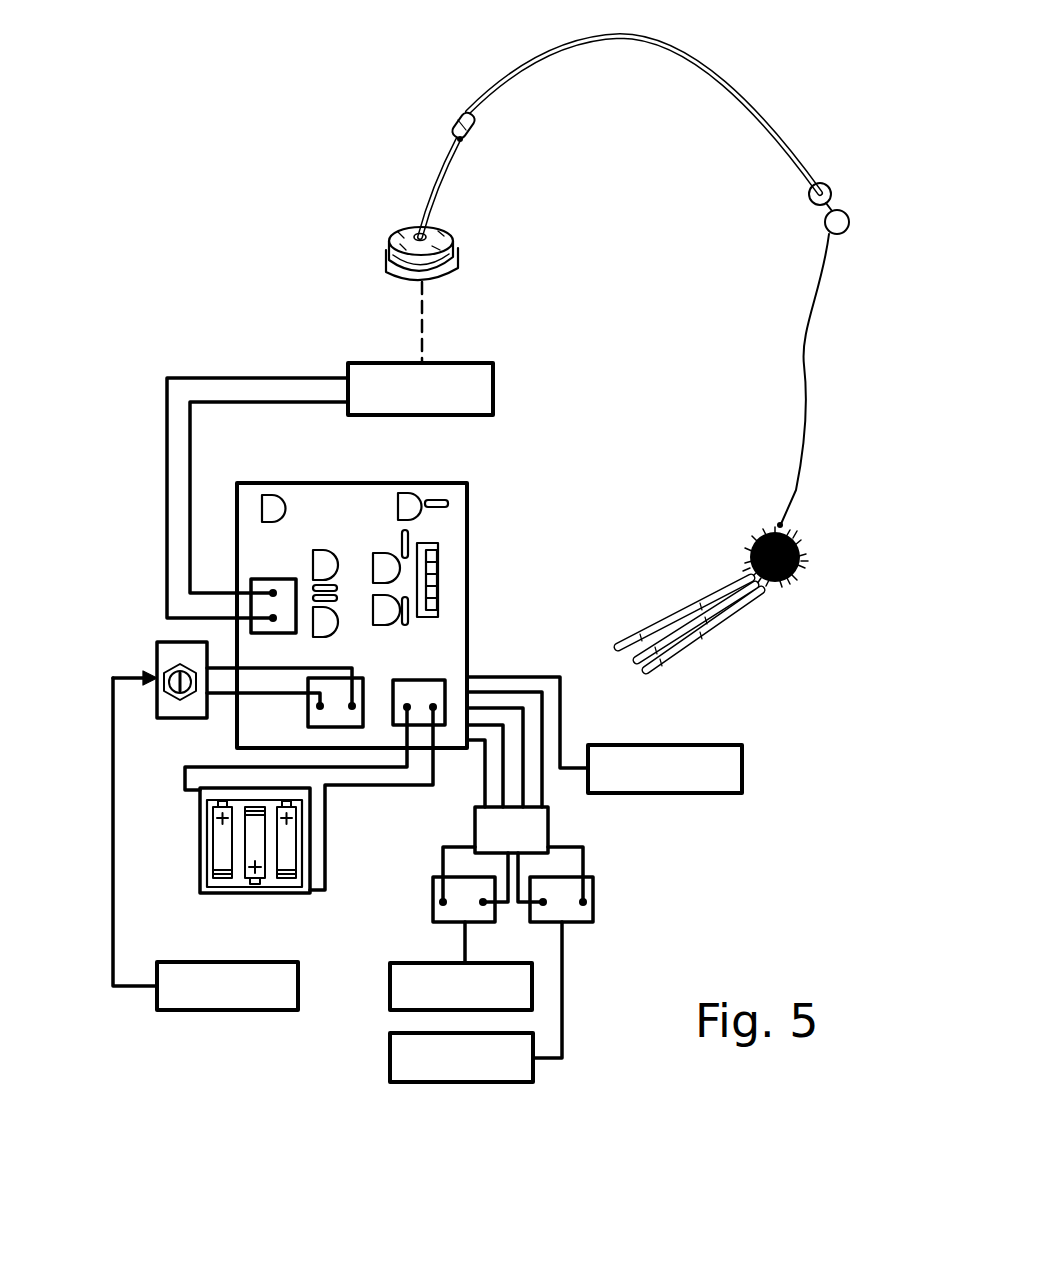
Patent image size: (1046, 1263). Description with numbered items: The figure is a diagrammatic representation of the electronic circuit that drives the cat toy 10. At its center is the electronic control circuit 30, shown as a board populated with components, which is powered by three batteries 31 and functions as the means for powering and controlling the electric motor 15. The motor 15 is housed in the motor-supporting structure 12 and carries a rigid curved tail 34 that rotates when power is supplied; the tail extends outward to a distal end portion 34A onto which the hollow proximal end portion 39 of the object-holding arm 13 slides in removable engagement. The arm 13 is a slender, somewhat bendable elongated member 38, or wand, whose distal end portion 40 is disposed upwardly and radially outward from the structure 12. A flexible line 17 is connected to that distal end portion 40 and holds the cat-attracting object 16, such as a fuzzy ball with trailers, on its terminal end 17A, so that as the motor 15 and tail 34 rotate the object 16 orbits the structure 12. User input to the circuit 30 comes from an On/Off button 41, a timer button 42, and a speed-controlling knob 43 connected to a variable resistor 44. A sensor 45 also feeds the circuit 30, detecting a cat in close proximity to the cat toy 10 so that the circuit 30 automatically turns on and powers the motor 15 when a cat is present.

The cat toy 10 is at (116, 44).
The motor-supporting structure 12 is at (466, 249).
The object-holding arm 13 is at (581, 48).
The electric motor 15 is at (481, 363).
The cat-attracting object 16 is at (753, 532).
The flexible line 17 is at (805, 362).
The terminal end 17A is at (777, 522).
The electronic control circuit 30 is at (475, 478).
The batteries 31 is at (223, 855).
The rigid curved tail 34 is at (433, 178).
The distal end portion of the tail 34A is at (460, 144).
The elongated member 38 is at (708, 71).
The proximal end portion 39 is at (474, 130).
The distal end portion 40 is at (832, 225).
The On/Off button 41 is at (390, 1058).
The timer button 42 is at (390, 988).
The speed-controlling knob 43 is at (230, 962).
The variable resistor 44 is at (163, 650).
The sensor 45 is at (715, 745).